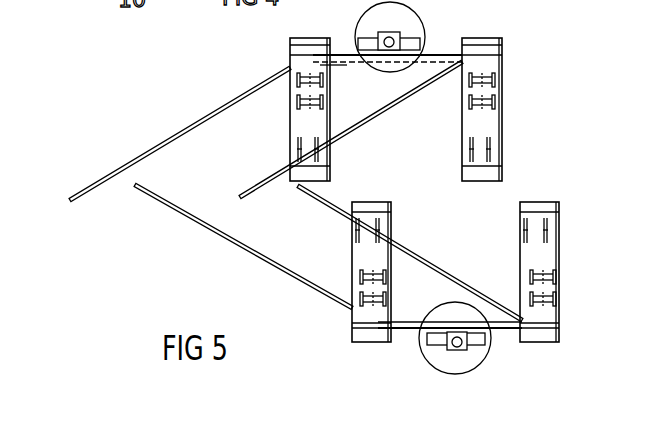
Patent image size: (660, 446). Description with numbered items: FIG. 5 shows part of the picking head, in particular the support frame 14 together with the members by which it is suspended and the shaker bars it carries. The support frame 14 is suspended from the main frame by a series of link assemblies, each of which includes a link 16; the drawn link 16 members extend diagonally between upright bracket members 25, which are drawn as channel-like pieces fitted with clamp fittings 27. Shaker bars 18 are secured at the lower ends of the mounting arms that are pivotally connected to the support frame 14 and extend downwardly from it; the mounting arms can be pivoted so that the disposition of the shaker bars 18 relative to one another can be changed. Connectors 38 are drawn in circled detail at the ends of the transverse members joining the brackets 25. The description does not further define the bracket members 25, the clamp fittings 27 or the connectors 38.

The support frame 14 is at (217, 241).
The link 16 is at (260, 185).
The shaker bar 18 is at (152, 150).
The bracket 25 is at (501, 129).
The bolt clamp 27 is at (299, 110).
The hinge connector 38 is at (399, 15).